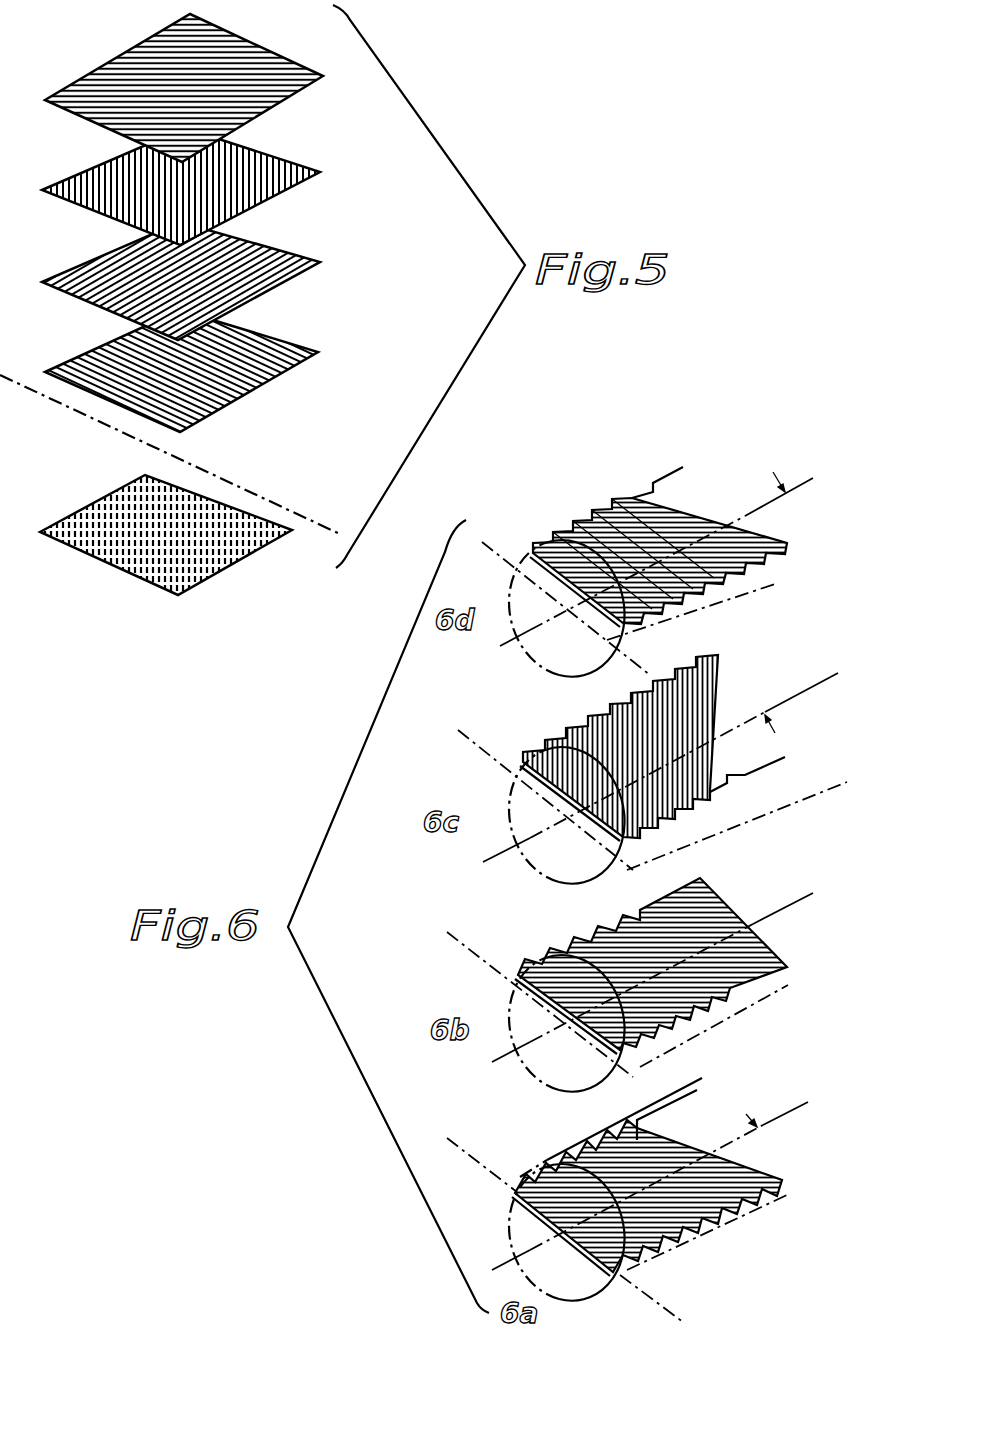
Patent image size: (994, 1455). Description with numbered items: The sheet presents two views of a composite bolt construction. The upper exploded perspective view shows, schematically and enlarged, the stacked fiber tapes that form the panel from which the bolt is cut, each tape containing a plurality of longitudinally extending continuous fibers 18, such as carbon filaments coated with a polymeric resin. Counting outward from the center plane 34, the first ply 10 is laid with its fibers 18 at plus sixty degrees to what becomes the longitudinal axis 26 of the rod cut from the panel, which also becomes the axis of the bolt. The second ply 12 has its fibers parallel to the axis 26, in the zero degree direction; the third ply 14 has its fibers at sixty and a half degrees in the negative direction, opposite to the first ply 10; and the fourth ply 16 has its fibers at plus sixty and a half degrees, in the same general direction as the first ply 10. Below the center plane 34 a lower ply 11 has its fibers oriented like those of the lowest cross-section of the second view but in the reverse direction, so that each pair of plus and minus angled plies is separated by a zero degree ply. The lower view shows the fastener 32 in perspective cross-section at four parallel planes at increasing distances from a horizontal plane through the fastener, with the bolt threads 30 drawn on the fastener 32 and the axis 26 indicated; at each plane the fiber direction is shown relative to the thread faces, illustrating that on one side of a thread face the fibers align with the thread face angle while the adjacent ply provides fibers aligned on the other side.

In FIG. 5, the first ply 10 is at (293, 333).
In FIG. 5, the lower ply 11 is at (147, 590).
In FIG. 5, the second ply 12 is at (290, 244).
In FIG. 5, the third ply 14 is at (285, 154).
In FIG. 5, the fourth ply 16 is at (235, 50).
In FIG. 5, the continuous fibers 18 is at (128, 76).
In FIG. 6, the longitudinal axis 26 is at (809, 480).
In FIG. 6, the bolt threads 30 is at (622, 505).
In FIG. 6, the fastener 32 is at (537, 660).
In FIG. 5, the center plane 34 is at (260, 493).
In FIG. 6, the center plane 34 is at (496, 548).